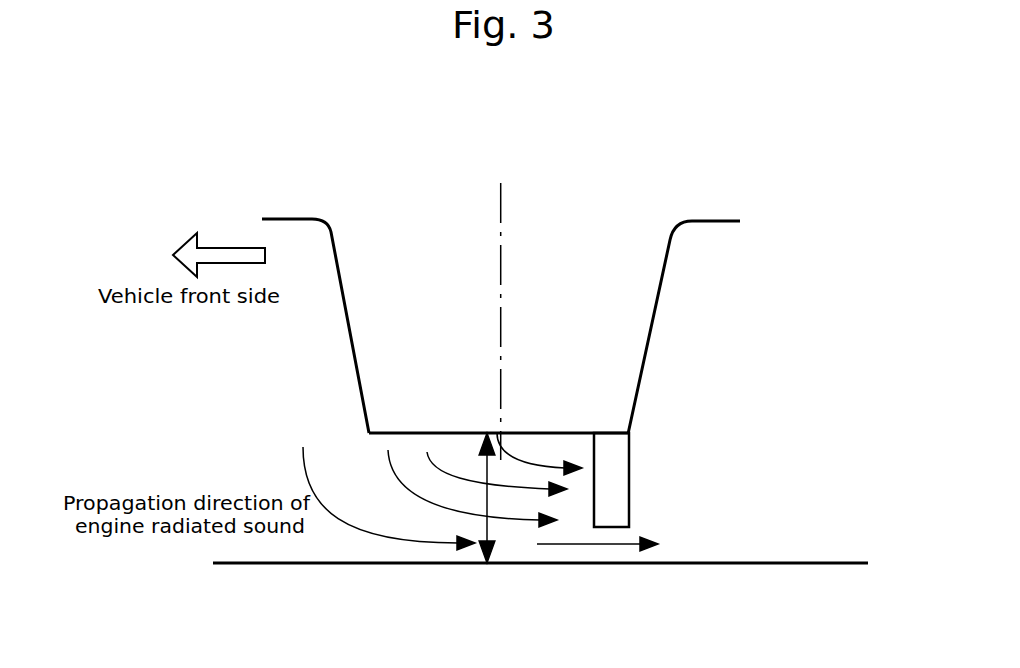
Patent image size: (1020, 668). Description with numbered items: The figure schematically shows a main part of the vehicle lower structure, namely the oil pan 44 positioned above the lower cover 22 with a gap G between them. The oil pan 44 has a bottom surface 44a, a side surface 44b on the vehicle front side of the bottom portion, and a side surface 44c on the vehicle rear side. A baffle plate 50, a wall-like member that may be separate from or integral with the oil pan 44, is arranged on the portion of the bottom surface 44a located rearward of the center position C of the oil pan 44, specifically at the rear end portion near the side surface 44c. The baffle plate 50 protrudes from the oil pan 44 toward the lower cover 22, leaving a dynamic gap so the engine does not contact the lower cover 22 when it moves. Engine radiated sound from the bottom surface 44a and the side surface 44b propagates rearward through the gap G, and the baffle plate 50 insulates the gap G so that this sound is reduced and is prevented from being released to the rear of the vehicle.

The oil pan 44 is at (504, 278).
The bottom surface 44a is at (428, 436).
The side surface 44b is at (347, 333).
The side surface 44c is at (655, 333).
The baffle plate 50 is at (630, 465).
The lower cover 22 is at (768, 563).
The center position C is at (500, 433).
The gap G is at (488, 527).